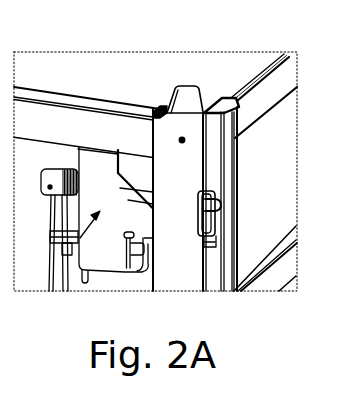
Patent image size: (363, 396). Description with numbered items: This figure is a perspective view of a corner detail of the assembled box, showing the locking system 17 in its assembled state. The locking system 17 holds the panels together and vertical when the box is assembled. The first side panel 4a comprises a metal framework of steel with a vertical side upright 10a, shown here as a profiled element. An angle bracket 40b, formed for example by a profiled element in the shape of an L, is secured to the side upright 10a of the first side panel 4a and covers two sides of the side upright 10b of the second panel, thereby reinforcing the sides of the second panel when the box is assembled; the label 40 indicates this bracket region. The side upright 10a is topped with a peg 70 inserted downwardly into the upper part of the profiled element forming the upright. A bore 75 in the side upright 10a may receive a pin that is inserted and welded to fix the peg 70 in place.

The side panel 4a is at (73, 118).
The peg 70 is at (188, 88).
The bore 75 is at (178, 140).
The side upright 10b is at (237, 106).
The channel 40 is at (228, 142).
The side upright 10a is at (185, 181).
The angle bracket 40b is at (221, 257).
The locking system 17 is at (72, 260).